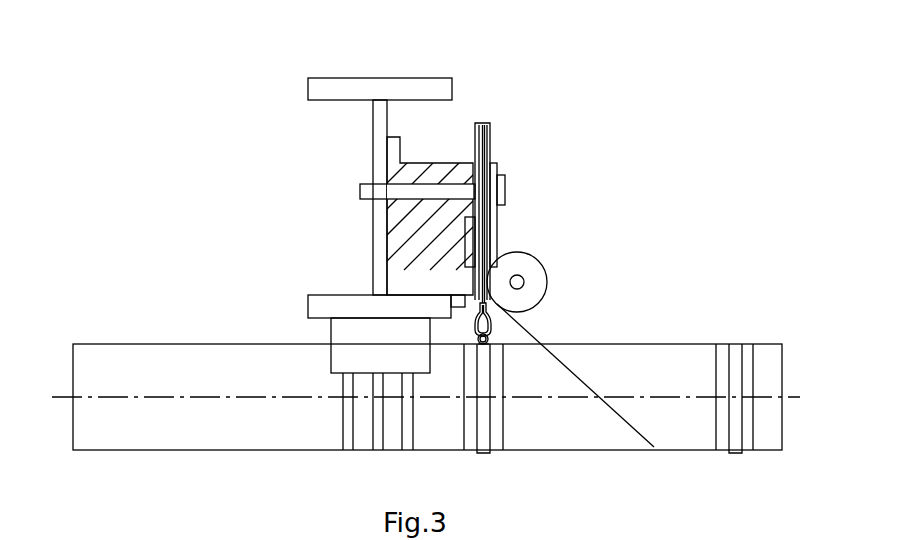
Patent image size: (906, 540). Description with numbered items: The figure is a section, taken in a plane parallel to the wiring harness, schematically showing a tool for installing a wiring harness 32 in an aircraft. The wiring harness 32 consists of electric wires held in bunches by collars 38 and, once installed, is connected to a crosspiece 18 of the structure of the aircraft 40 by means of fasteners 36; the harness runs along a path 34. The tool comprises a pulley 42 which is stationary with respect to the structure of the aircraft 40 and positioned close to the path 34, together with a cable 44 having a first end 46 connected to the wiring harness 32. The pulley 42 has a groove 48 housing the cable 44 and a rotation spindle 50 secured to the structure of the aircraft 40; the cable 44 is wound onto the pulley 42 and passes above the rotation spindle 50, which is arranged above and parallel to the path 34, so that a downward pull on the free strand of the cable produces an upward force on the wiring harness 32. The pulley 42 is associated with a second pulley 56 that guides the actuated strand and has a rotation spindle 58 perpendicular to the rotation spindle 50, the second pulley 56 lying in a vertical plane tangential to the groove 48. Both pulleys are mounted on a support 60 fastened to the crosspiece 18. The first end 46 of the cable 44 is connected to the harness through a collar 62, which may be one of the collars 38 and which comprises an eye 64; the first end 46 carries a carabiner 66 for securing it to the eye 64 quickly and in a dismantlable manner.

The crosspiece 18 is at (378, 111).
The wiring harness 32 is at (205, 397).
The path 34 is at (108, 397).
The fastener 36 is at (347, 450).
The collar 38 is at (735, 453).
The structure of the aircraft 40 is at (418, 79).
The pulley 42 is at (493, 133).
The cable 44 is at (606, 404).
The first end 46 is at (492, 318).
The groove 48 is at (483, 123).
The rotation spindle 50 is at (415, 190).
The second pulley 56 is at (547, 268).
The rotation spindle 58 is at (517, 280).
The support 60 is at (397, 247).
The collar 62 is at (482, 453).
The eye 64 is at (490, 338).
The carabiner 66 is at (474, 323).